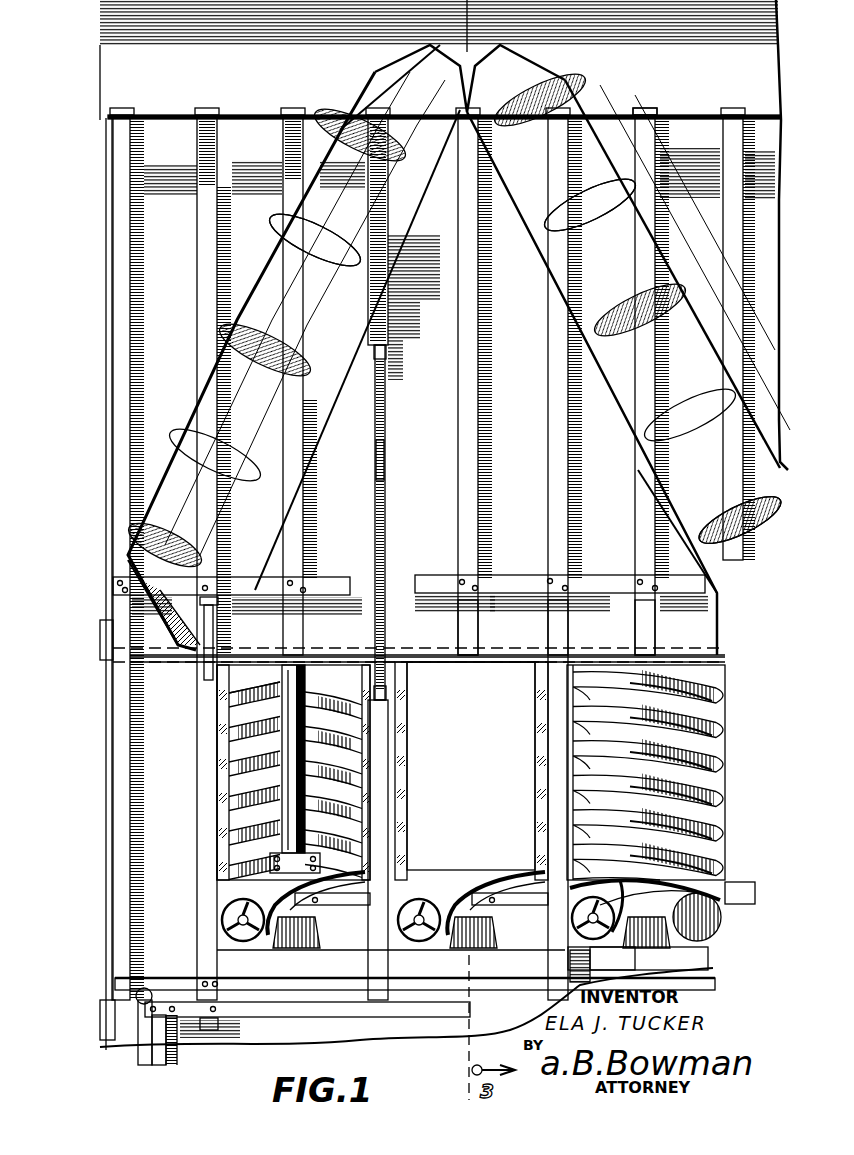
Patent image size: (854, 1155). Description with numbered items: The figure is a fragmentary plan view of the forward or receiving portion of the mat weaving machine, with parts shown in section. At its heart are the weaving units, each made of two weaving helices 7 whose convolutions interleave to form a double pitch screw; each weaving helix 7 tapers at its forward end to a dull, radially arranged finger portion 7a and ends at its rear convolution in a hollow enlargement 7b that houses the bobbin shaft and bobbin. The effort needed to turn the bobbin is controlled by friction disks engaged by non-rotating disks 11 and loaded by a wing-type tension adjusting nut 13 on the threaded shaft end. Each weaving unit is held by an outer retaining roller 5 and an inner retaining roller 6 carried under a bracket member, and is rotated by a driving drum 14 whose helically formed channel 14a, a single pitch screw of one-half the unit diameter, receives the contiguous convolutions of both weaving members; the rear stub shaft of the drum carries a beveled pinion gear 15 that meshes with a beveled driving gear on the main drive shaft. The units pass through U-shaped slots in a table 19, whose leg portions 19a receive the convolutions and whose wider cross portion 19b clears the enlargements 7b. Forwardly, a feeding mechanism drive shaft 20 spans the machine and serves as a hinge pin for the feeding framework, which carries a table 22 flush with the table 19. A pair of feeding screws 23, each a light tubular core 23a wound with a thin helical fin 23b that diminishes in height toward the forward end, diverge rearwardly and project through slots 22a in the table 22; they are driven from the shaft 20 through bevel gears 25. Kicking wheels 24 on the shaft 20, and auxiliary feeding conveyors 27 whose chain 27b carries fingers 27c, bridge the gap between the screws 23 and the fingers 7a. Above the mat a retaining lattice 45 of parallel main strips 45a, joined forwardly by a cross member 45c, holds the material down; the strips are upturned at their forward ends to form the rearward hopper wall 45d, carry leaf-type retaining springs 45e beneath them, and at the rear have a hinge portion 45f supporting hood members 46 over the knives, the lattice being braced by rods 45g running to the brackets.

The weaving unit outer retaining roller 5 is at (268, 860).
The weaving unit inner retaining roller 6 is at (283, 800).
The weaving helix 7 is at (535, 768).
The finger portion 7a is at (460, 722).
The hollow enlargement 7b is at (432, 880).
The non-rotating disk 11 is at (222, 915).
The tension adjusting nut 13 is at (238, 905).
The driving drum 14 is at (232, 782).
The helically formed channel 14a is at (232, 742).
The beveled pinion gear 15 is at (650, 975).
The table 19 is at (722, 645).
The leg portions 19a is at (712, 665).
The cross portion 19b is at (515, 940).
The feeding mechanism drive shaft 20 is at (88, 712).
The table 22 is at (118, 330).
The slots 22a is at (630, 415).
The feeding screw 23 is at (500, 95).
The tubular shank or core 23a is at (305, 240).
The fin 23b is at (345, 130).
The kicking wheel 24 is at (204, 680).
The bevel gears 25 is at (100, 655).
The auxiliary feeding conveyor 27 is at (384, 506).
The chain 27b is at (385, 478).
The fingers 27c is at (386, 446).
The retaining lattice 45 is at (110, 745).
The main strips 45a is at (552, 630).
The cross member 45c is at (618, 582).
The rearward wall 45d is at (655, 92).
The retaining spring 45e is at (458, 630).
The hinge portion 45f is at (380, 1020).
The rods 45g is at (143, 1062).
The hood members 46 is at (172, 1066).